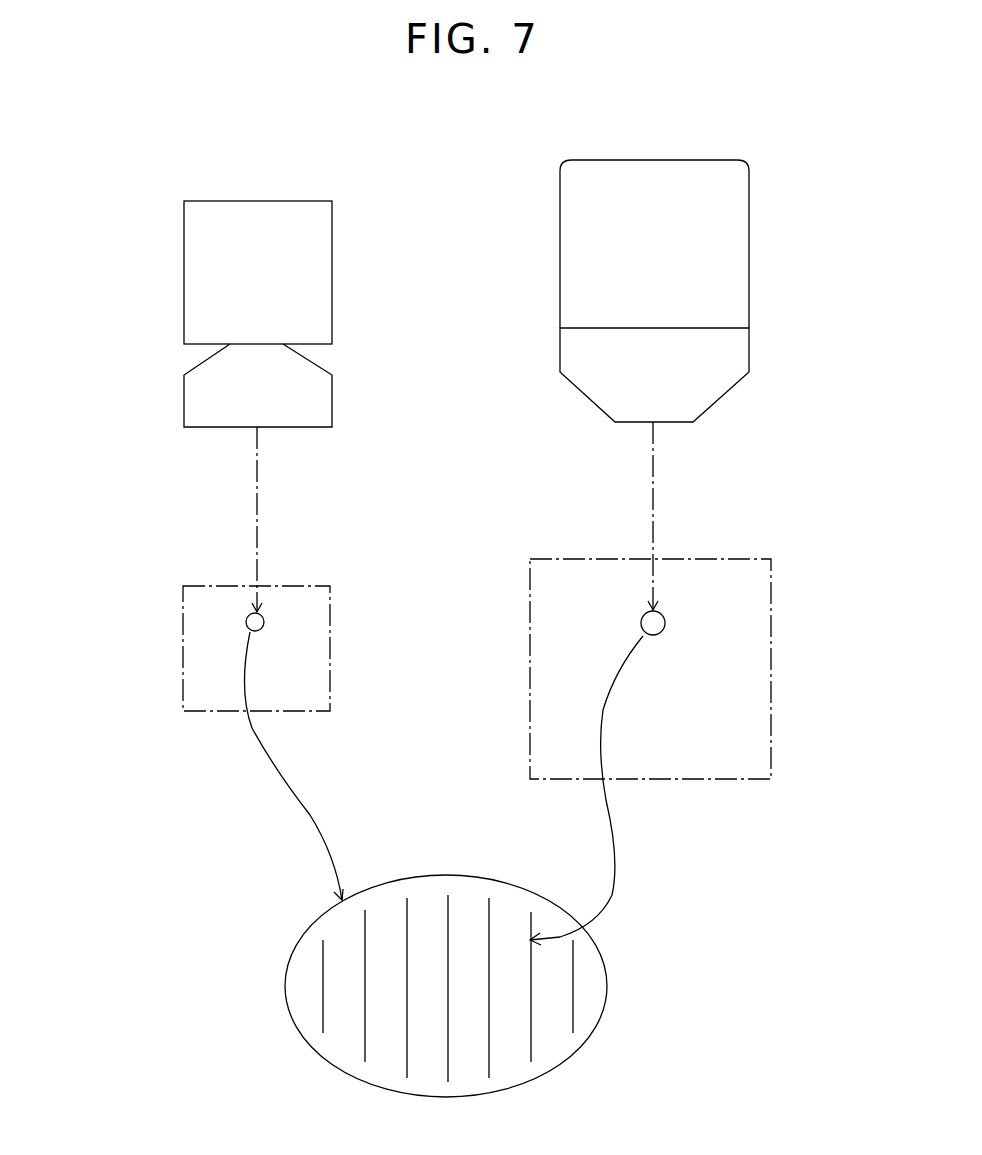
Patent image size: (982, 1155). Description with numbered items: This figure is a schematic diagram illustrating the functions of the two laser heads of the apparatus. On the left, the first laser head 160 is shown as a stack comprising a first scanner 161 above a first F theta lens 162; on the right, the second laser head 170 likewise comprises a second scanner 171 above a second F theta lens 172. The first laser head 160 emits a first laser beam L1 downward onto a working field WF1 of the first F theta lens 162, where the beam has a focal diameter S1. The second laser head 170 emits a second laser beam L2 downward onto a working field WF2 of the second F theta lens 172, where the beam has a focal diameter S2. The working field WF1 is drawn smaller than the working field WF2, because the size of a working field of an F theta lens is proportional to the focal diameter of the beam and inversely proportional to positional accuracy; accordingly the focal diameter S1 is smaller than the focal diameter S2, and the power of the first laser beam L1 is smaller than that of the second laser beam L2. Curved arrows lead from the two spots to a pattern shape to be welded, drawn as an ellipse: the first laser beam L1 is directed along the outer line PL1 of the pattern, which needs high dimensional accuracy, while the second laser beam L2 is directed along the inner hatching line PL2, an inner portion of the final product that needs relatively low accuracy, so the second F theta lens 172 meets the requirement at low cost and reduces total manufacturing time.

The first laser head 160 is at (190, 314).
The first scanner 161 is at (184, 281).
The first F theta lens 162 is at (216, 385).
The second laser head 170 is at (717, 291).
The second scanner 171 is at (740, 249).
The second F theta lens 172 is at (688, 375).
The first laser beam L1 is at (257, 538).
The second laser beam L2 is at (653, 500).
The working field of first F theta lens WF1 is at (183, 612).
The working field of second F theta lens WF2 is at (530, 608).
The focal diameter of first laser beam S1 is at (264, 620).
The focal diameter of second laser beam S2 is at (665, 622).
The outer line PL1 is at (510, 886).
The inner hatching line PL2 is at (575, 978).